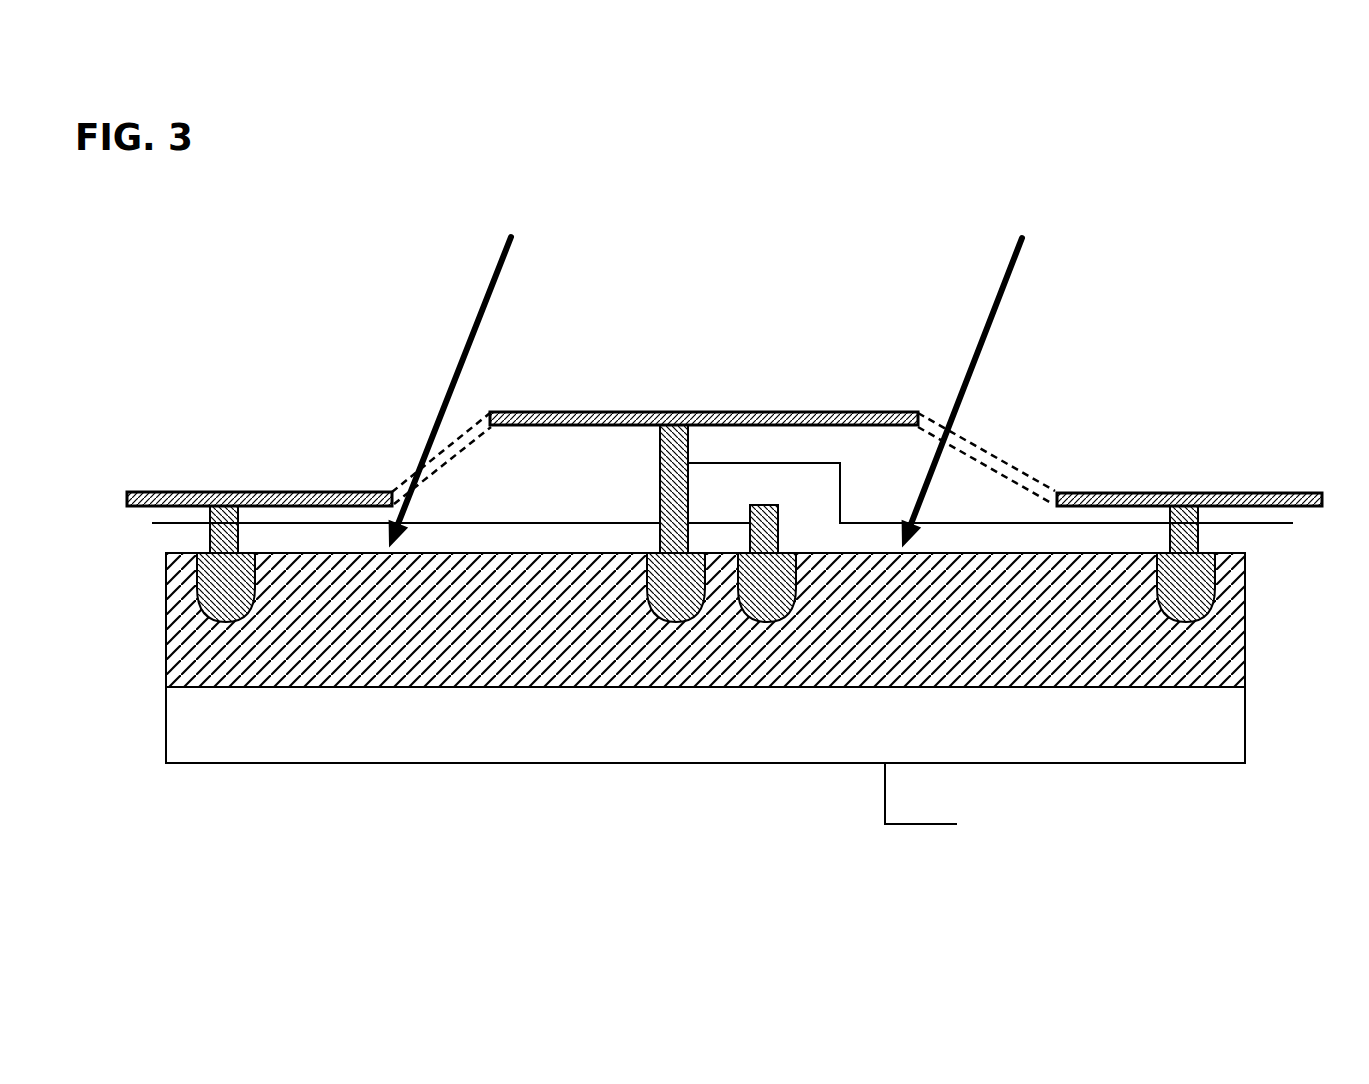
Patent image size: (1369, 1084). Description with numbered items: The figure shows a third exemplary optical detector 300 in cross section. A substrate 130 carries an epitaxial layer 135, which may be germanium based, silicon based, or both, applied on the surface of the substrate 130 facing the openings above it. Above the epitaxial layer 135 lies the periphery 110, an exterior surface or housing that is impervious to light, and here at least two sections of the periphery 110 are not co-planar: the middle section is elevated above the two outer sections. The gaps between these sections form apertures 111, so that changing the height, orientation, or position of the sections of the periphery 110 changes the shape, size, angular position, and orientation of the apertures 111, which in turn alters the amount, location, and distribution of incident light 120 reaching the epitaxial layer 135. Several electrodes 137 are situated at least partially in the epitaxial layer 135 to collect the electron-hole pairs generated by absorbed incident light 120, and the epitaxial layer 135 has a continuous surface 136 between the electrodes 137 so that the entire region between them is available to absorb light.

The optical detector 300 is at (147, 196).
The periphery 110 is at (188, 492).
The aperture 111 is at (478, 418).
The incident light 120 is at (755, 357).
The substrate 130 is at (547, 739).
The epitaxial layer 135 is at (548, 659).
The continuous surface 136 is at (357, 553).
The electrodes 137 is at (219, 603).